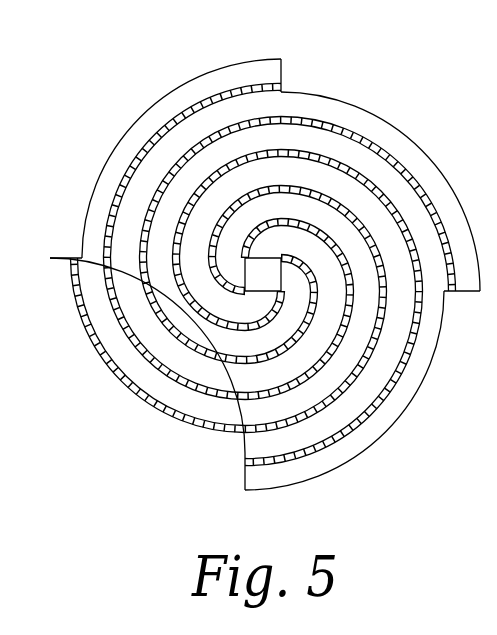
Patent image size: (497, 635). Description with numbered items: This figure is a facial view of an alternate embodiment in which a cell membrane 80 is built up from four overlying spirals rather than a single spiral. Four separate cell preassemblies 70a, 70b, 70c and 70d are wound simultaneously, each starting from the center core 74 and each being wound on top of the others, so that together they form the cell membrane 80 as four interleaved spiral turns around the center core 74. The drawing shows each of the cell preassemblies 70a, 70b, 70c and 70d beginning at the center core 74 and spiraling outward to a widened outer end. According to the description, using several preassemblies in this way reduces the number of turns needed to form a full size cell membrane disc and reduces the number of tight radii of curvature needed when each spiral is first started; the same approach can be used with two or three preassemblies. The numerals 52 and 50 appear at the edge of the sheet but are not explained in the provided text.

The cell preassembly 70a is at (367, 143).
The cell preassembly 70b is at (375, 415).
The cell preassembly 70c is at (158, 407).
The cell preassembly 70d is at (155, 133).
The center core 74 is at (269, 274).
The cell membrane 80 is at (345, 98).
The substrate layer 52 is at (485, 41).
The substrate 50 is at (488, 488).